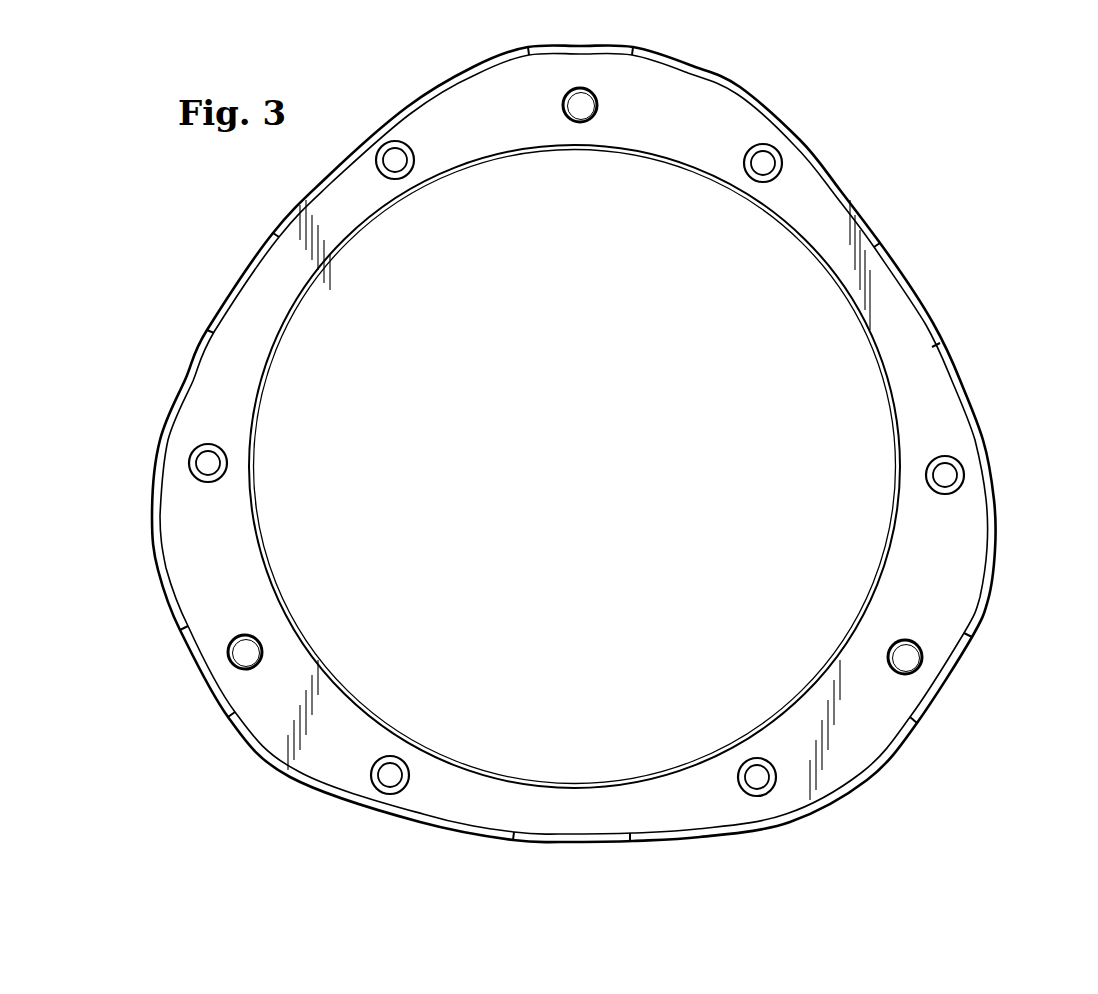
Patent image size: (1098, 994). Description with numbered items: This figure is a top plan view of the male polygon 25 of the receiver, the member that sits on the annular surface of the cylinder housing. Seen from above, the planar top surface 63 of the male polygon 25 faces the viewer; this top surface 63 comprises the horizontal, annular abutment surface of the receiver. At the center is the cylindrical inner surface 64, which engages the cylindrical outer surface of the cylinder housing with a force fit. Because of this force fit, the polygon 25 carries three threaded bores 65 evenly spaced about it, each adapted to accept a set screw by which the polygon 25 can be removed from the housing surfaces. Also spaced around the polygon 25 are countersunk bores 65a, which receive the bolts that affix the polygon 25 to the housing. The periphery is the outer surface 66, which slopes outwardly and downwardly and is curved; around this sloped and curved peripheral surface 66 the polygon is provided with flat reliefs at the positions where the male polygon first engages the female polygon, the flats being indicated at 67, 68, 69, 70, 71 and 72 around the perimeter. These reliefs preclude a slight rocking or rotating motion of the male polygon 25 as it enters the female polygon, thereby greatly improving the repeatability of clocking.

The male polygon 25 is at (828, 208).
The top surface 63 is at (950, 428).
The cylindrical inner surface 64 is at (872, 346).
The threaded bores 65 is at (590, 107).
The counter sunk bores 65a is at (395, 158).
The outer surface 66 is at (985, 442).
The top edge 67 is at (607, 48).
The upper left edge 68 is at (241, 278).
The lower left edge 69 is at (188, 653).
The bottom edge 70 is at (590, 843).
The lower right edge 71 is at (954, 668).
The upper right edge 72 is at (900, 273).